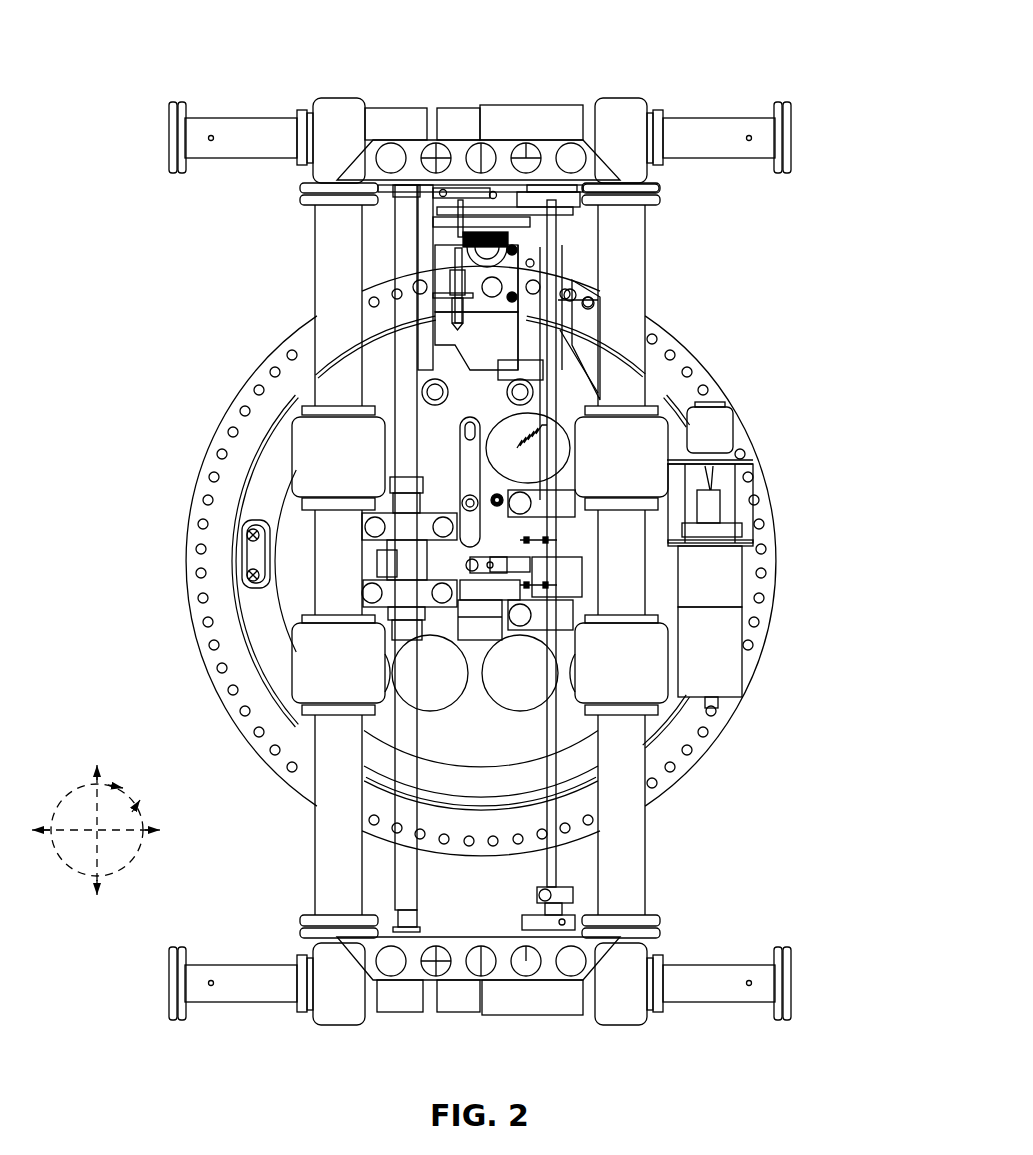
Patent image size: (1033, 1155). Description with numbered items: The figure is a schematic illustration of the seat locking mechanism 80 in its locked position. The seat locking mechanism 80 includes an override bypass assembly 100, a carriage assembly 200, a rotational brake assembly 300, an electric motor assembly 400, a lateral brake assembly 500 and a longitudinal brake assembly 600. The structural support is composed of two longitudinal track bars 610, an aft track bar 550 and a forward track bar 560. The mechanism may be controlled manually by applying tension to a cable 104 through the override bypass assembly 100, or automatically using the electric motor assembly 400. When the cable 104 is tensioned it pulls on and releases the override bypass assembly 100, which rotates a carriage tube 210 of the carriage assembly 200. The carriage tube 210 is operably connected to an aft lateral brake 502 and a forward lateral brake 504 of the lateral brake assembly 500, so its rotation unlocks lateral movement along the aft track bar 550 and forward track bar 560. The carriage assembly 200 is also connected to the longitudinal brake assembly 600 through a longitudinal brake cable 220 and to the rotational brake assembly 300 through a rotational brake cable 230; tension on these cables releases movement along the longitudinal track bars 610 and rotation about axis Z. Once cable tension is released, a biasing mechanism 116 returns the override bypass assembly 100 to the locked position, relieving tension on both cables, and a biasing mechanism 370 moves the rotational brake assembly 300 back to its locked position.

The seat locking mechanism 80 is at (178, 40).
The override bypass assembly 100 is at (380, 260).
The cable 104 is at (460, 262).
The biasing mechanism 116 is at (585, 194).
The carriage assembly 200 is at (585, 588).
The carriage tube 210 is at (550, 762).
The longitudinal brake cable 220 is at (372, 560).
The rotational brake cable 230 is at (415, 455).
The rotational brake assembly 300 is at (573, 277).
The biasing mechanism 370 is at (575, 420).
The electric motor assembly 400 is at (785, 562).
The lateral brake assembly 500 is at (590, 85).
The aft lateral brake 502 is at (498, 97).
The forward lateral brake 504 is at (555, 1025).
The aft track bar 550 is at (718, 130).
The forward track bar 560 is at (727, 987).
The longitudinal brake assembly 600 is at (360, 565).
The longitudinal track bars 610 is at (332, 840).